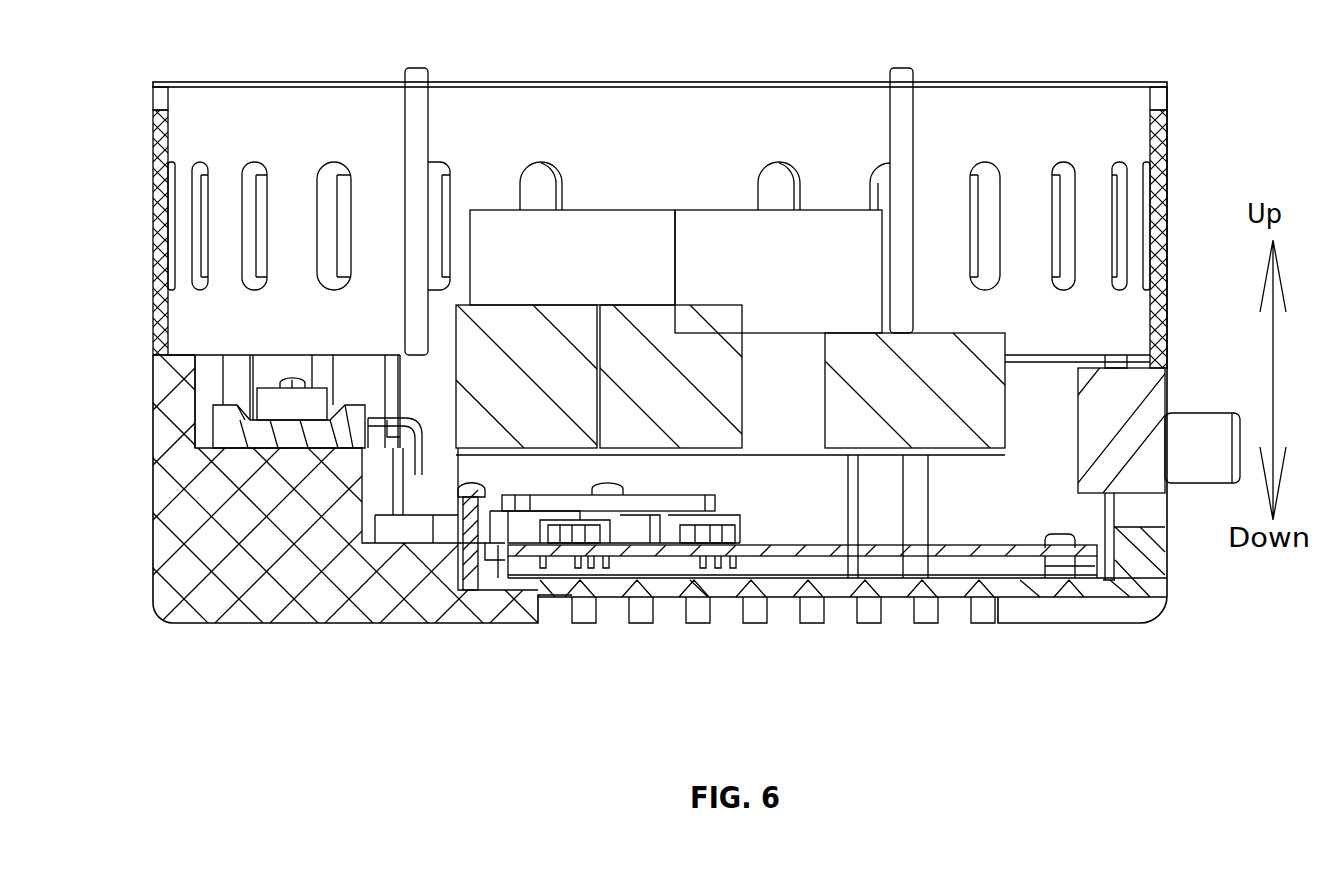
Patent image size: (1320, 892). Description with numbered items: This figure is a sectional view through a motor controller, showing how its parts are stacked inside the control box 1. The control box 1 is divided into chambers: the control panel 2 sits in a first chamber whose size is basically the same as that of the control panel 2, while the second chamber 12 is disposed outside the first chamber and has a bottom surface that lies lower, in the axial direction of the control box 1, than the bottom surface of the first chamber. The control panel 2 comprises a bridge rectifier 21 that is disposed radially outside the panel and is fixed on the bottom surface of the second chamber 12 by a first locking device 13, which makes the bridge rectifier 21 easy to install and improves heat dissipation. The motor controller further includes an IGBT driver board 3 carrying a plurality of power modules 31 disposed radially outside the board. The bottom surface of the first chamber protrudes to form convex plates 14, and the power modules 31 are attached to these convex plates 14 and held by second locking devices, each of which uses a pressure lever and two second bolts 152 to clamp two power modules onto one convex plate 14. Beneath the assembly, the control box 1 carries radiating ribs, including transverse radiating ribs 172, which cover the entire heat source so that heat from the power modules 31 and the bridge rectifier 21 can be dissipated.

The control box 1 is at (696, 345).
The control panel 2 is at (765, 446).
The IGBT driver board 3 is at (950, 550).
The second chamber 12 is at (312, 460).
The first locking device 13 is at (275, 400).
The convex plate 14 is at (412, 548).
The bridge rectifier 21 is at (285, 432).
The power module 31 is at (418, 533).
The second bolt 152 is at (477, 557).
The transverse radiating rib 172 is at (698, 610).